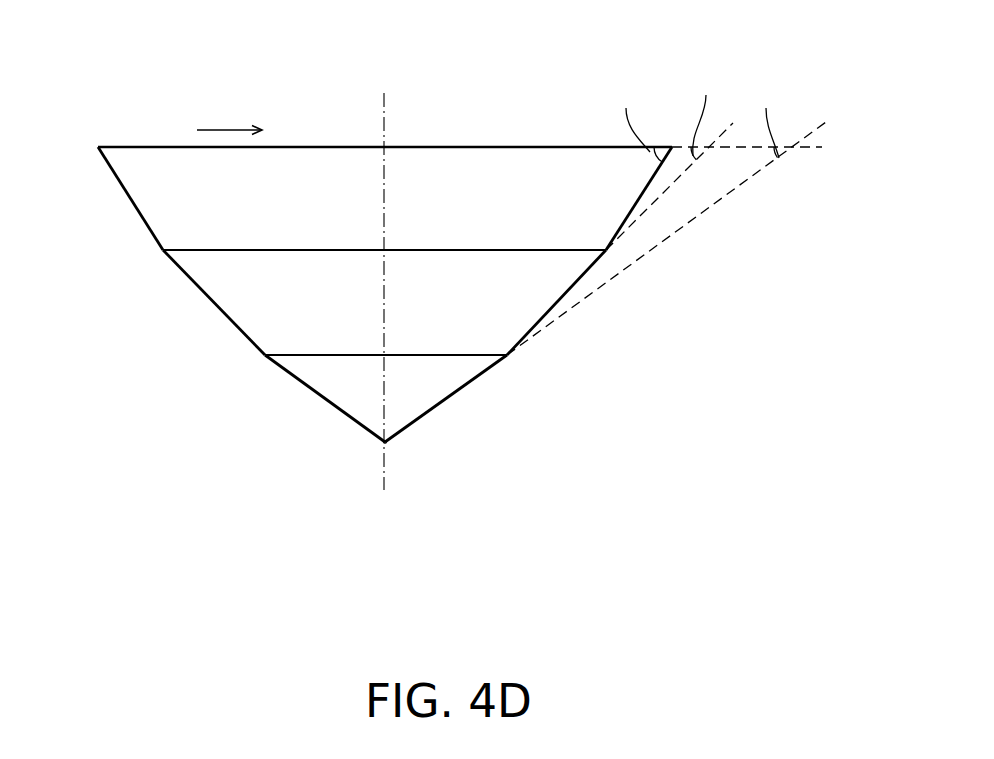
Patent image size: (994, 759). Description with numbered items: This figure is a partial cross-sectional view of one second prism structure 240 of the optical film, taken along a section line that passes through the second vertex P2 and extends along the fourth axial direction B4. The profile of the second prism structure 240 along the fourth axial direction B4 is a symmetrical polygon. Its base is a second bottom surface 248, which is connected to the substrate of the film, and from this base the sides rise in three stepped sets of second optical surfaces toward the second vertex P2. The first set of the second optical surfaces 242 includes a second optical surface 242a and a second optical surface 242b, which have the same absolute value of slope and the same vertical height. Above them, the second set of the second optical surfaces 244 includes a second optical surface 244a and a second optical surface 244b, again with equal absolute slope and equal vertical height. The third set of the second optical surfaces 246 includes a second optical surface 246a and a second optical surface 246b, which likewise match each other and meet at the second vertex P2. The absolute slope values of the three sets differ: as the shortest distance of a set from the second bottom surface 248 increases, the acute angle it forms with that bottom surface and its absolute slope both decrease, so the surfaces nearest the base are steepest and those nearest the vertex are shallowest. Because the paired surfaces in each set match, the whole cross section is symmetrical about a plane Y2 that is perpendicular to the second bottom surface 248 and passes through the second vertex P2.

The second prism structure 240 is at (91, 58).
The first set of the second optical surfaces 242 is at (503, 198).
The second optical surface 242a is at (118, 177).
The second optical surface 242b is at (653, 177).
The second set of the second optical surfaces 244 is at (458, 308).
The second optical surface 244a is at (190, 280).
The second optical surface 244b is at (580, 282).
The third set of the second optical surfaces 246 is at (510, 572).
The second optical surface 246a is at (343, 415).
The second optical surface 246b is at (468, 385).
The second bottom surface 248 is at (452, 145).
The second vertex P2 is at (388, 443).
The plane Y2 is at (385, 96).
The fourth axial direction B4 is at (229, 117).